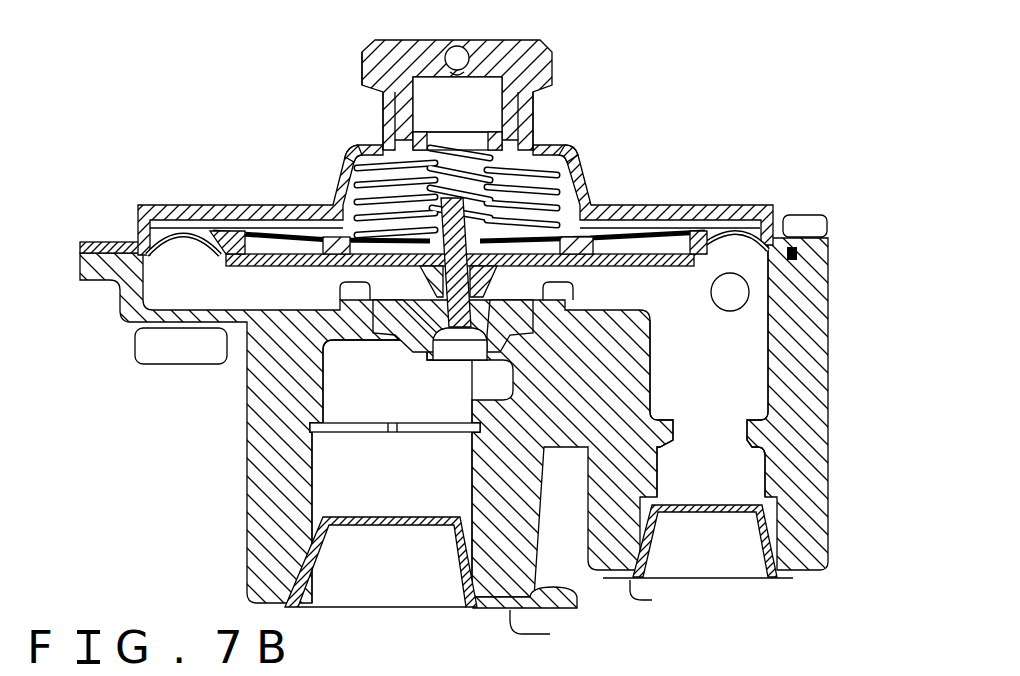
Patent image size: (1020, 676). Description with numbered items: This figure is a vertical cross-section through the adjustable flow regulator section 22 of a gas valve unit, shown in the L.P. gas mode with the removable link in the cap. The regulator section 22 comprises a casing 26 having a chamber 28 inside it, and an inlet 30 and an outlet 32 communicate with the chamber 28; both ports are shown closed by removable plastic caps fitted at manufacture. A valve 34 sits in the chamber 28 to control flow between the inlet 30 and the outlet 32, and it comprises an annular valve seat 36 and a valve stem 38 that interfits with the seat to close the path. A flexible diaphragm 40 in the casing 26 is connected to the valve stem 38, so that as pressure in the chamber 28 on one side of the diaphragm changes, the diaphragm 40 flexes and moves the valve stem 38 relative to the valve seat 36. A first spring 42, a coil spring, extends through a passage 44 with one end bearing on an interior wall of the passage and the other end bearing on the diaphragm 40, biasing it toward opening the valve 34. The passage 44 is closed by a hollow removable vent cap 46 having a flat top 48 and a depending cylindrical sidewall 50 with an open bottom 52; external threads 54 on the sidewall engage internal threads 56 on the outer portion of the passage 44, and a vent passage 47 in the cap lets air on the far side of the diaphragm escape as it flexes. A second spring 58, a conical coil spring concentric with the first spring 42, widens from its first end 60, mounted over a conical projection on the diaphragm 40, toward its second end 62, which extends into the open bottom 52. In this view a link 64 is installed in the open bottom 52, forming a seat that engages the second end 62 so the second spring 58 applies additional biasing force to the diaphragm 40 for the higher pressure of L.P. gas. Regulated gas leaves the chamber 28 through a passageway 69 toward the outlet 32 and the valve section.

The adjustable flow regulator section 22 is at (473, 324).
The casing 26 is at (132, 305).
The chamber 28 is at (746, 262).
The inlet 30 is at (370, 462).
The outlet 32 is at (730, 375).
The valve 34 is at (415, 370).
The annular valve seat 36 is at (373, 273).
The valve stem 38 is at (520, 274).
The flexible diaphragm 40 is at (640, 262).
The first spring 42 is at (355, 200).
The passage 44 is at (578, 178).
The vent cap 46 is at (540, 60).
The vent passage 47 is at (473, 68).
The flat top 48 is at (362, 60).
The cylindrical sidewall 50 is at (390, 110).
The open bottom 52 is at (370, 150).
The external threads 54 is at (527, 99).
The internal threads 56 is at (513, 128).
The second spring 58 is at (574, 150).
The first end 60 is at (594, 207).
The second end 62 is at (440, 130).
The link 64 is at (500, 140).
The passageway 69 is at (727, 290).